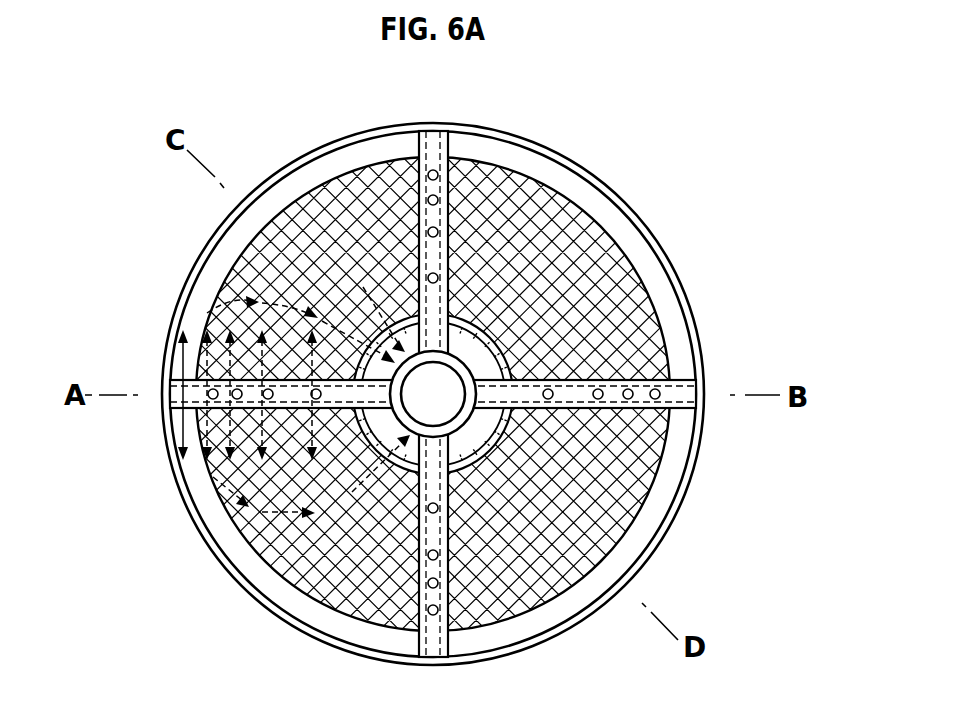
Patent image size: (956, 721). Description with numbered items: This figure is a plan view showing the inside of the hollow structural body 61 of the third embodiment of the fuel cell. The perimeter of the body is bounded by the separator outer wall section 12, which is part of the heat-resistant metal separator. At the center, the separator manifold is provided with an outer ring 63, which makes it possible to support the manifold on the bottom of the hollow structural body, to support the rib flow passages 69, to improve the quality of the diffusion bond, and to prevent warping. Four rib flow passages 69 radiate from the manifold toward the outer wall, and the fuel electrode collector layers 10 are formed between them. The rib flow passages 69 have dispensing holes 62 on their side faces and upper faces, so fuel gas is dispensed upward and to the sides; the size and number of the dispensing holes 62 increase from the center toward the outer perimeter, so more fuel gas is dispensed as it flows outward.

The fuel electrode collector layers 10 is at (578, 243).
The separator outer wall section 12 is at (580, 617).
The hollow structural body 61 is at (553, 145).
The dispensing holes 62 is at (207, 395).
The outer ring 63 is at (488, 318).
The rib flow passages 69 is at (675, 393).